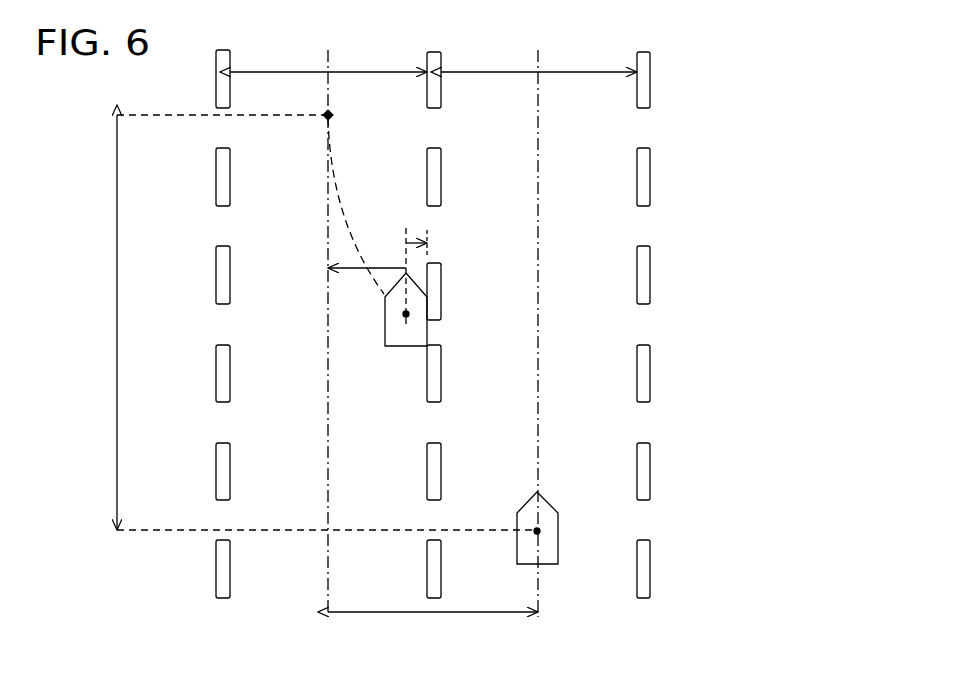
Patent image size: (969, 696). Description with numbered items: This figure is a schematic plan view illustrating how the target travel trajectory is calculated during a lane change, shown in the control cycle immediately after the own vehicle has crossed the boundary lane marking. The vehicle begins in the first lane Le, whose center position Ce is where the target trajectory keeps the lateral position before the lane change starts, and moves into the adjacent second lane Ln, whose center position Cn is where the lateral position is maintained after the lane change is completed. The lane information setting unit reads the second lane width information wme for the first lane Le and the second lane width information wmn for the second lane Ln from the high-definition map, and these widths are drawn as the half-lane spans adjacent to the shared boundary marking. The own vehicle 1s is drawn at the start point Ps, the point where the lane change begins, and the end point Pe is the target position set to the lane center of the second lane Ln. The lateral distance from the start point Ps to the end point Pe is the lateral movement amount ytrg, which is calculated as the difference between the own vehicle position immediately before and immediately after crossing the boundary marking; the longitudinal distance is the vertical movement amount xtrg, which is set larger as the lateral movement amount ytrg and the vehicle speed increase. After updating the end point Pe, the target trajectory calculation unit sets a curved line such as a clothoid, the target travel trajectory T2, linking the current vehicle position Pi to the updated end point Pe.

The second lane Ln is at (263, 240).
The first lane Le is at (608, 133).
The center position of the second lane Cn is at (328, 58).
The center position of the first lane Ce is at (538, 58).
The second lane width information wmn is at (328, 81).
The second lane width information wme is at (539, 81).
The end point Pe is at (333, 115).
The vertical movement amount xtrg is at (305, 322).
The lateral movement amount ytrg is at (433, 626).
The target travel trajectory T2 is at (335, 170).
The vehicle position at time k Pi is at (403, 314).
The own vehicle positioned at the start point 1s is at (548, 567).
The start point Ps is at (541, 530).